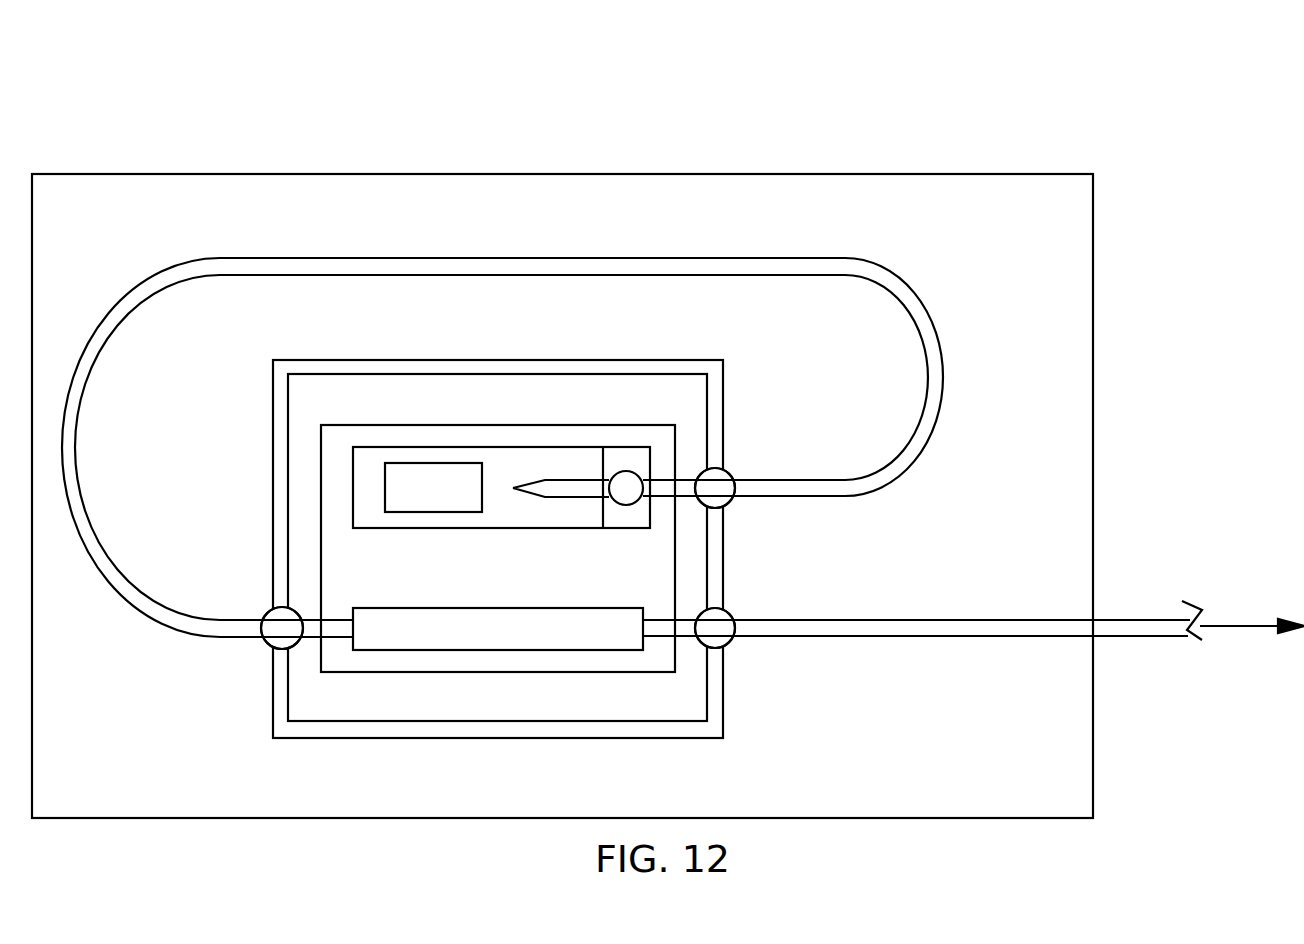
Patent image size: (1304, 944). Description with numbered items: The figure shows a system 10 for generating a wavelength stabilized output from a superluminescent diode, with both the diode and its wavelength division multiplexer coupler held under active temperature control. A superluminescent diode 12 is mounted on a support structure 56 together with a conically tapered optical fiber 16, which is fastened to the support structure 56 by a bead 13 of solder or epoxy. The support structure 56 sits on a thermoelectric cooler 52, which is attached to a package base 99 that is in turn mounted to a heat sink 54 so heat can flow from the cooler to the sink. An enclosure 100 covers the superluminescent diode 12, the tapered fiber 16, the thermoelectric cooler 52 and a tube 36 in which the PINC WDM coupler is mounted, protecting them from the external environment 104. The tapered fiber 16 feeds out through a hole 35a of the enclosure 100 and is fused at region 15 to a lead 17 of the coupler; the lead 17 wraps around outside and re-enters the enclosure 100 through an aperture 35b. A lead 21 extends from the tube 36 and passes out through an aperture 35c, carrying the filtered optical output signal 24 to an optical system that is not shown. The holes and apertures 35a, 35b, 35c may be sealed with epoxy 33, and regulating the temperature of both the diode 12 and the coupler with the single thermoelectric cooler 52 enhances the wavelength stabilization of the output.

The system 10 is at (805, 113).
The external environment 104 is at (1205, 132).
The heat sink 54 is at (1002, 759).
The enclosure 100 is at (497, 366).
The package base 99 is at (303, 494).
The thermoelectric cooler 52 is at (340, 553).
The fusion splice region 15 is at (610, 275).
The conically tapered optical fiber 16 is at (928, 375).
The lead of PINC WDM coupler 17 is at (83, 394).
The support structure 56 is at (563, 511).
The superluminescent diode 12 is at (433, 513).
The bead of solder or epoxy 13 is at (625, 505).
The tube 36 is at (495, 628).
The lead of PINC WDM coupler 21 is at (1142, 622).
The filtered optical output signal 24 is at (1243, 625).
The epoxy seal 33 is at (266, 612).
The hole of enclosure 35a is at (727, 505).
The aperture of enclosure 35b is at (270, 648).
The aperture of enclosure 35c is at (725, 645).